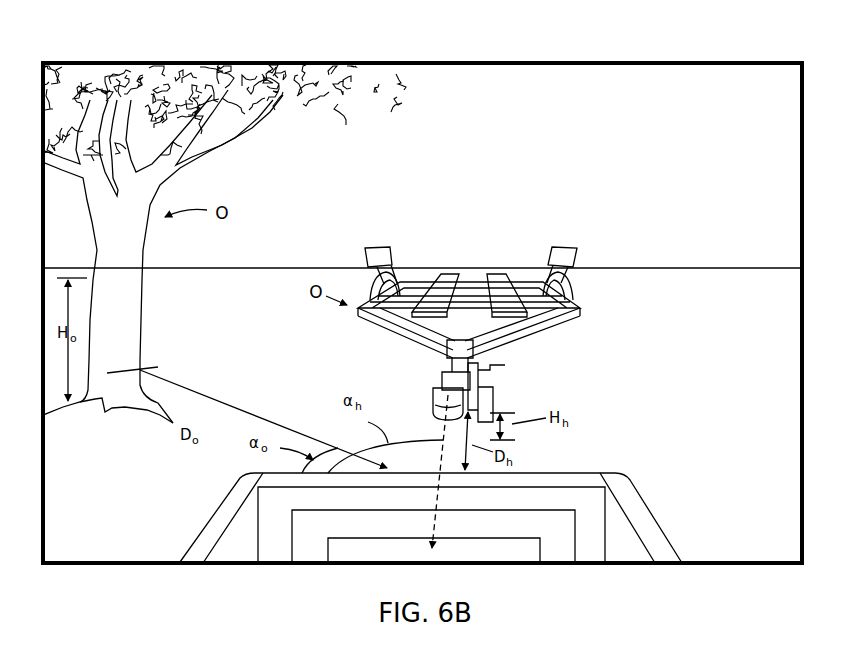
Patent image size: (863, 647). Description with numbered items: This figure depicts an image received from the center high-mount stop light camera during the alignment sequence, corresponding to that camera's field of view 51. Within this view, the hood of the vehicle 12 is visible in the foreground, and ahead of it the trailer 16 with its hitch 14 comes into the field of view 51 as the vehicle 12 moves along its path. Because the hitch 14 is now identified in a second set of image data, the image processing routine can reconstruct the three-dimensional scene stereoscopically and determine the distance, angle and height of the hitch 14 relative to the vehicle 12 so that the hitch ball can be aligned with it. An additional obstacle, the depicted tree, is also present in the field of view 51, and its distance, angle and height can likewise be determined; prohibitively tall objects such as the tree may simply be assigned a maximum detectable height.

The field of view 51 is at (695, 63).
The trailer 16 is at (582, 245).
The trailer hitch 14 is at (437, 395).
The vehicle 12 is at (689, 505).